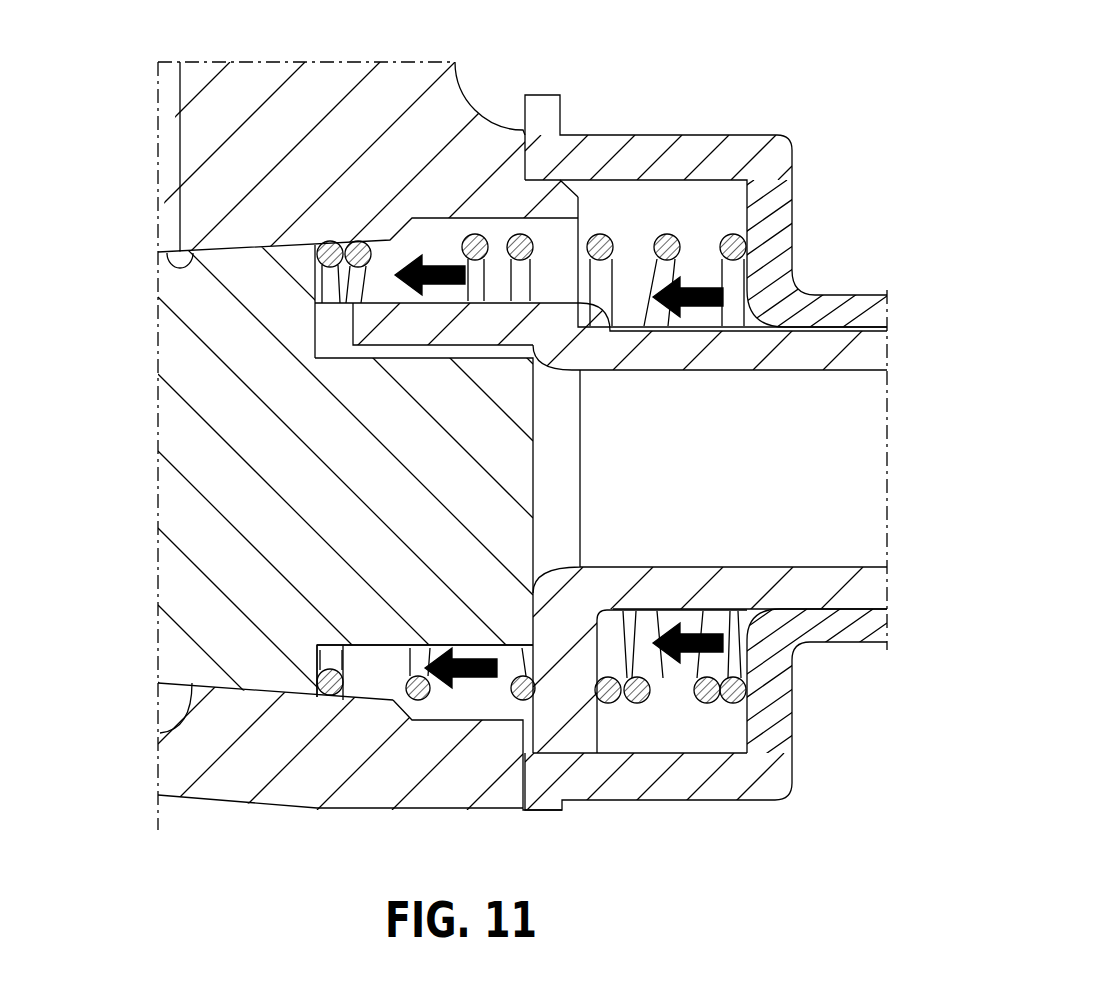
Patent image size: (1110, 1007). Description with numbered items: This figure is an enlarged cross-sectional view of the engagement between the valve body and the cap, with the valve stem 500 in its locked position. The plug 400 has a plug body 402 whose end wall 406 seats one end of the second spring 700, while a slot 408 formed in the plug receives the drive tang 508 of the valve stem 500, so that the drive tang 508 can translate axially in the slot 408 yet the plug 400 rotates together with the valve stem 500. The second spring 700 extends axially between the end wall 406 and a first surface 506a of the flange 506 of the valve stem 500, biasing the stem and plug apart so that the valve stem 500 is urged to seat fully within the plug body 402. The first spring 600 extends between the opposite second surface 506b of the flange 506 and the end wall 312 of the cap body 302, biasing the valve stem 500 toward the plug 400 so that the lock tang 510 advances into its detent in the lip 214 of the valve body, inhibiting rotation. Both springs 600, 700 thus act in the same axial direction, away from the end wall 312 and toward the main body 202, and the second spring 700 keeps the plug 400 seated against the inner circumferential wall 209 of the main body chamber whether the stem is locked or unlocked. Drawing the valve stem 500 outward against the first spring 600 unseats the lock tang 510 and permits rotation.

The main body 202 is at (242, 755).
The inner circumferential wall 209 is at (165, 250).
The lip 214 is at (578, 200).
The cap body 302 is at (665, 92).
The end wall 312 is at (740, 723).
The plug 400 is at (240, 477).
The plug body 402 is at (185, 705).
The end wall 406 is at (350, 655).
The slot 408 is at (318, 325).
The valve stem 500 is at (740, 372).
The flange 506 is at (576, 638).
The first surface 506a is at (517, 694).
The second surface 506b is at (617, 697).
The drive tang 508 is at (425, 318).
The lock tang 510 is at (562, 737).
The first spring 600 is at (672, 235).
The second spring 700 is at (445, 222).